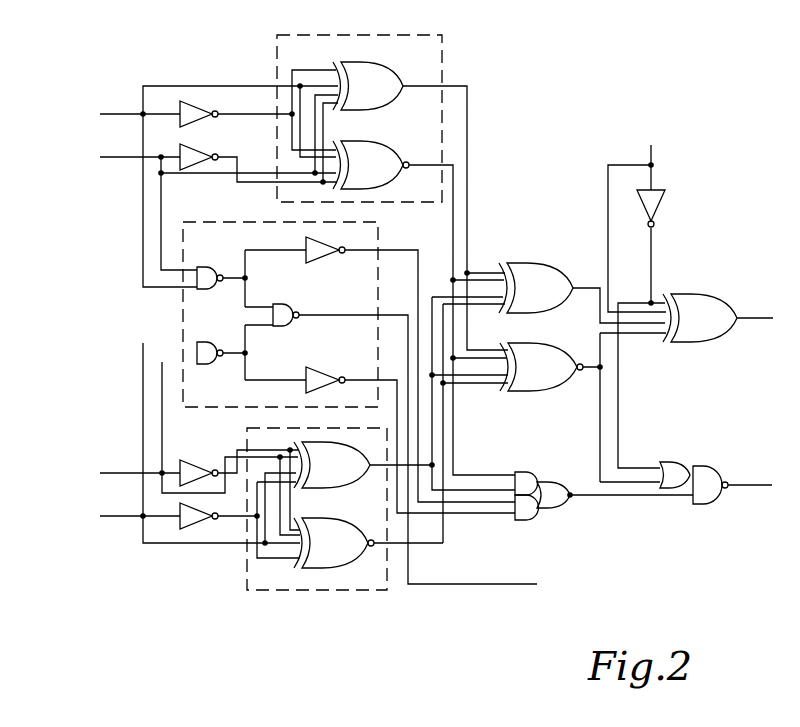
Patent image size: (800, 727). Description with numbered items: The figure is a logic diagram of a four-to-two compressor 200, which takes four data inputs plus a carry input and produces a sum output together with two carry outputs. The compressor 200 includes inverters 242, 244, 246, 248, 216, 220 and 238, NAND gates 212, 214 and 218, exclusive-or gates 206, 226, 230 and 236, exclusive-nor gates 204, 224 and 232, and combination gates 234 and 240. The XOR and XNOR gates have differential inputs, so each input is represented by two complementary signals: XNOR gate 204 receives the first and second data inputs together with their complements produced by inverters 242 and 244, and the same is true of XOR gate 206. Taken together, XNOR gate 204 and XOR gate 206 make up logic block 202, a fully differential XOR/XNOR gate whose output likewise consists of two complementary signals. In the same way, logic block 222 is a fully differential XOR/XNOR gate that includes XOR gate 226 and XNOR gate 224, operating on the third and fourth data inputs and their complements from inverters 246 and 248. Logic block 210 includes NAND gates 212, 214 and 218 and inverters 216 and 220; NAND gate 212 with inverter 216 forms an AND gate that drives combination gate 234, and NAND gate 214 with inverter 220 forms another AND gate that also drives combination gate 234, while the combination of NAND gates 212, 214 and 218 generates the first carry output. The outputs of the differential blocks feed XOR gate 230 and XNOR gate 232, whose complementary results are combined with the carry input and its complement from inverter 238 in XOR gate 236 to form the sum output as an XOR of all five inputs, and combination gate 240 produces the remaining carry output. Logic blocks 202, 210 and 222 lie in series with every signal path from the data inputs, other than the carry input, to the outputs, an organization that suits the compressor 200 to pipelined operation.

The compressor 200 is at (708, 72).
The logic block 202 is at (443, 47).
The XNOR gate 204 is at (382, 63).
The XOR gate 206 is at (381, 142).
The logic block 210 is at (380, 232).
The NAND gate 212 is at (200, 267).
The NAND gate 214 is at (203, 341).
The inverter 216 is at (322, 258).
The NAND gate 218 is at (287, 303).
The inverter 220 is at (318, 368).
The logic block 222 is at (265, 592).
The XNOR gate 224 is at (332, 569).
The XOR gate 226 is at (330, 488).
The XOR gate 230 is at (537, 264).
The XNOR gate 232 is at (537, 393).
The combination gate 234 is at (538, 482).
The XOR gate 236 is at (710, 297).
The inverter 238 is at (661, 202).
The combination gate 240 is at (677, 463).
The inverter 242 is at (201, 106).
The inverter 244 is at (198, 146).
The inverter 246 is at (207, 466).
The inverter 248 is at (197, 528).